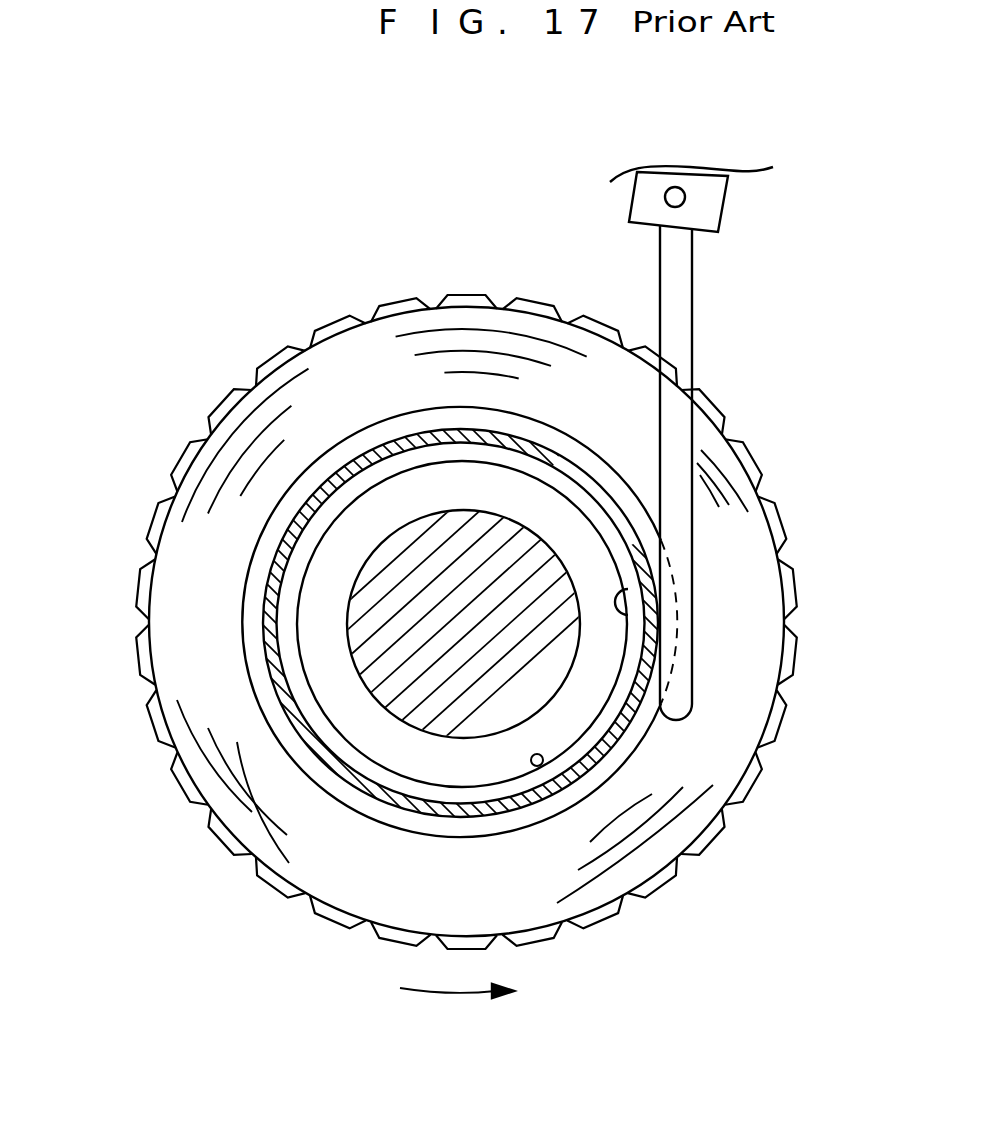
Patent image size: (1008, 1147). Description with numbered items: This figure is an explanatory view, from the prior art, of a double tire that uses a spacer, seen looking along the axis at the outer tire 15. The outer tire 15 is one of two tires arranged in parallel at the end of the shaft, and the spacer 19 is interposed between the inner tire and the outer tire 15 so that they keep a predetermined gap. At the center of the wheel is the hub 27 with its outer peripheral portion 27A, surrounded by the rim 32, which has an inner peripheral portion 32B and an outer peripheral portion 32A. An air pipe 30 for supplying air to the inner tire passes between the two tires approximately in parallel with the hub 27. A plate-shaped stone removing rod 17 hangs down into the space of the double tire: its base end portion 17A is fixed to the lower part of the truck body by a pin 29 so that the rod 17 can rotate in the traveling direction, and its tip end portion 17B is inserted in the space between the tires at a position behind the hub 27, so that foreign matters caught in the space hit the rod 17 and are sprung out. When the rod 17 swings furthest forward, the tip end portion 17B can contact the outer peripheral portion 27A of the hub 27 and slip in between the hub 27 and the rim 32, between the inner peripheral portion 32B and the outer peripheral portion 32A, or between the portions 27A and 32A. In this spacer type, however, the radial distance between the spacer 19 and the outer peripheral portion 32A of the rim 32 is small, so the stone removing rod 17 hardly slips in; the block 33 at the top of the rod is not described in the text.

The outer tire 15 is at (812, 336).
The stone removing rod 17 is at (722, 465).
The base end portion 17A is at (652, 210).
The tip end portion 17B is at (677, 703).
The spacer 19 is at (652, 794).
The hub 27 is at (373, 695).
The outer peripheral portion of the hub 27A is at (400, 716).
The pin 29 is at (686, 198).
The air pipe 30 is at (545, 770).
The rim 32 is at (504, 625).
The outer peripheral portion of the rim 32A is at (620, 747).
The inner peripheral portion of the rim 32B is at (617, 598).
The support block 33 is at (750, 209).